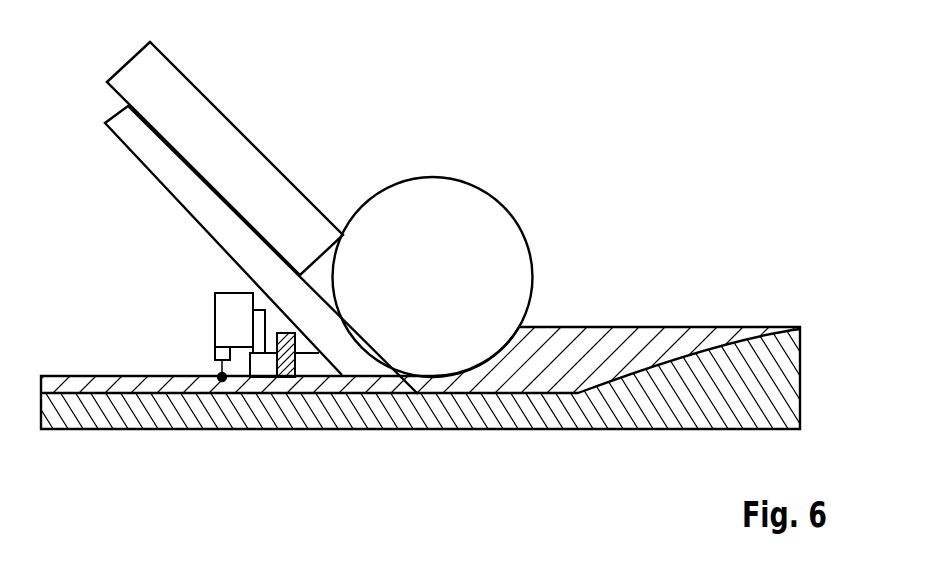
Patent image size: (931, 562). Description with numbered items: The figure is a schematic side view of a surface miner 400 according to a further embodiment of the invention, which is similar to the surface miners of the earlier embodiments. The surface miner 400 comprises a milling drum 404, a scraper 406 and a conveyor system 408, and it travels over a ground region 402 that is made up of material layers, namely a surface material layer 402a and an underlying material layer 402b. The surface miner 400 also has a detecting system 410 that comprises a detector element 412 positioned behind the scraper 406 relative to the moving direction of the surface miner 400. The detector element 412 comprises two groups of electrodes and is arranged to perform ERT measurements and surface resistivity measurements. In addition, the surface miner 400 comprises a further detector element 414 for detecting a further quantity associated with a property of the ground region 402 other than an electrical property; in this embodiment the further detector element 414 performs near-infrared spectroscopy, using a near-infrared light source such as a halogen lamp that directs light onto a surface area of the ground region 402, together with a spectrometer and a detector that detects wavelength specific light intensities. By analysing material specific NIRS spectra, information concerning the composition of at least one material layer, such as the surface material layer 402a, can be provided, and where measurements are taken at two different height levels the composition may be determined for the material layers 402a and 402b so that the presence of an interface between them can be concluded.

The surface miner 400 is at (553, 90).
The ground region 402 is at (713, 313).
The surface material layer 402a is at (627, 338).
The material layer 402b is at (680, 407).
The milling drum 404 is at (432, 177).
The scraper 406 is at (155, 177).
The conveyor system 408 is at (237, 127).
The detecting system 410 is at (141, 349).
The detector element 412 is at (285, 377).
The further detector element 414 is at (215, 312).